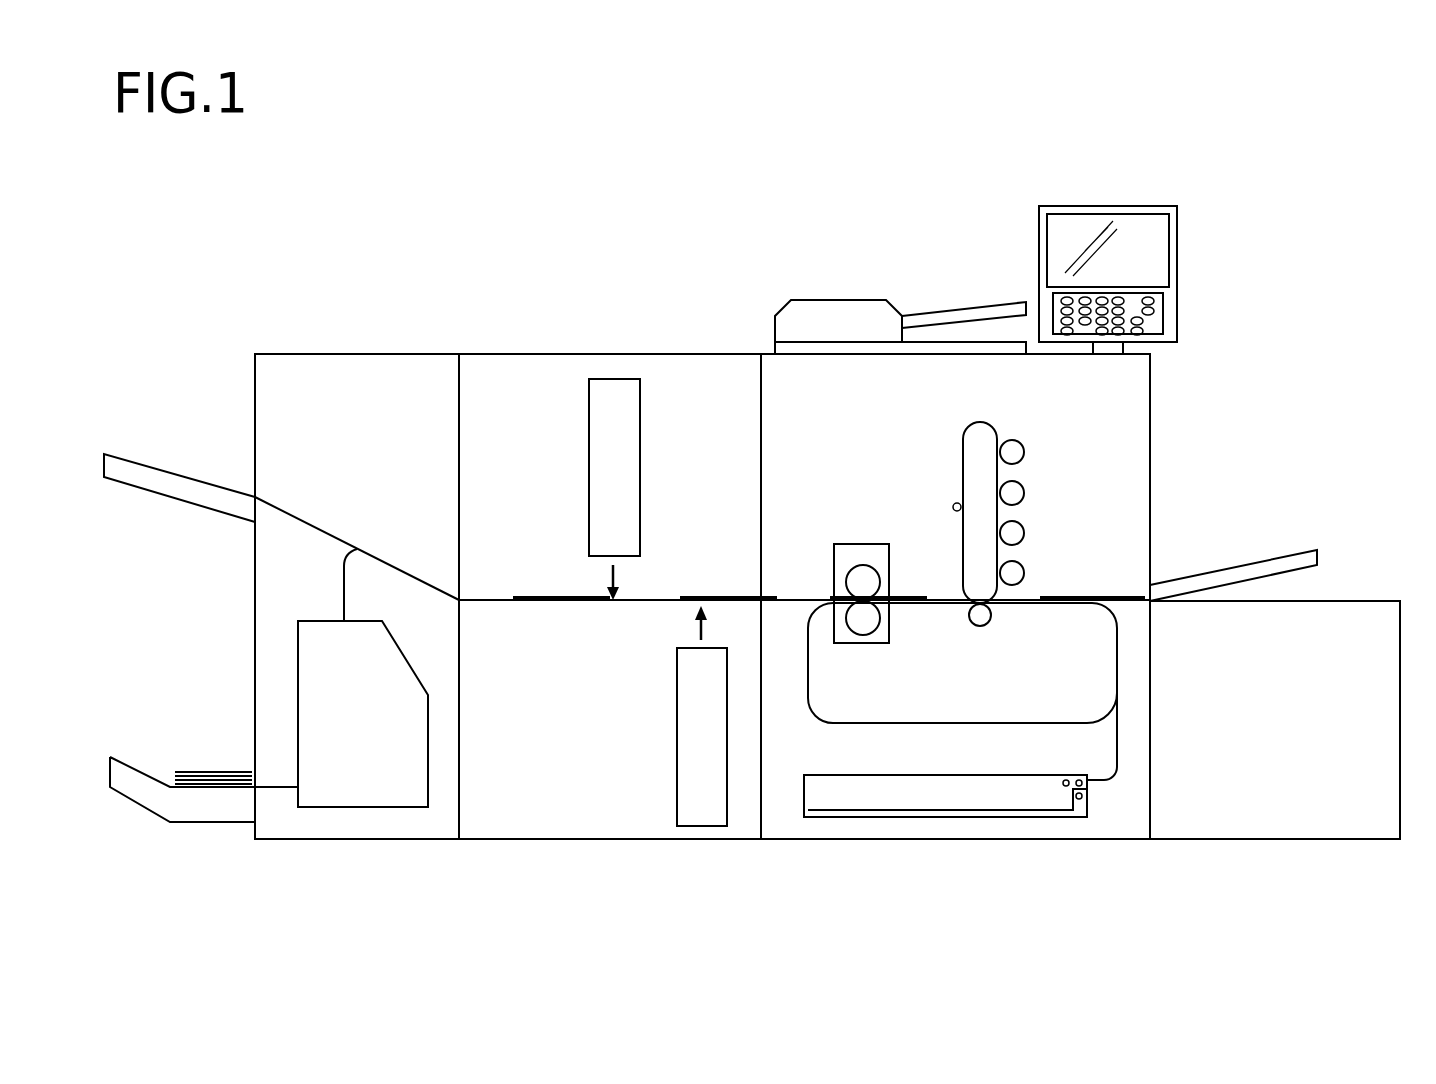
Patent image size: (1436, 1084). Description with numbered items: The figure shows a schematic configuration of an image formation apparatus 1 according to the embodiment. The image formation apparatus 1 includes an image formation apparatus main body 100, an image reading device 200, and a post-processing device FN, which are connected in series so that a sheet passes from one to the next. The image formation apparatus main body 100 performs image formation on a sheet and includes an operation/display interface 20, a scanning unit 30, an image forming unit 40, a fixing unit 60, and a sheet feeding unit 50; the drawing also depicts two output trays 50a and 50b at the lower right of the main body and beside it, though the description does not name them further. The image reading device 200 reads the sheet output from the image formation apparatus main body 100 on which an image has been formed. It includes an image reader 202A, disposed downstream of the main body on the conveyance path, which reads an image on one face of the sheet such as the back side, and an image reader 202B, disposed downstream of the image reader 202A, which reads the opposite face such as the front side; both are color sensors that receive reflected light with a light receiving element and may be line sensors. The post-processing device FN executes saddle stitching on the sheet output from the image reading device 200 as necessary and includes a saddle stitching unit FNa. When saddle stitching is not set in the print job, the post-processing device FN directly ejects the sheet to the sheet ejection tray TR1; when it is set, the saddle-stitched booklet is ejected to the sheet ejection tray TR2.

The image formation apparatus 1 is at (1286, 197).
The operation/display interface 20 is at (1113, 207).
The scanning unit 30 is at (860, 300).
The image forming unit 40 is at (1017, 452).
The sheet feeding unit 50 is at (1128, 850).
The sheet output tray 50a is at (943, 817).
The sheet output tray 50b is at (1268, 840).
The fixing unit 60 is at (865, 544).
The image formation apparatus main body 100 is at (1150, 387).
The image reading device 200 is at (489, 354).
The image reader 202A is at (703, 827).
The image reader 202B is at (604, 378).
The post-processing device FN is at (318, 354).
The saddle stitching unit FNa is at (300, 643).
The sheet ejection tray TR1 is at (148, 470).
The sheet ejection tray TR2 is at (148, 772).